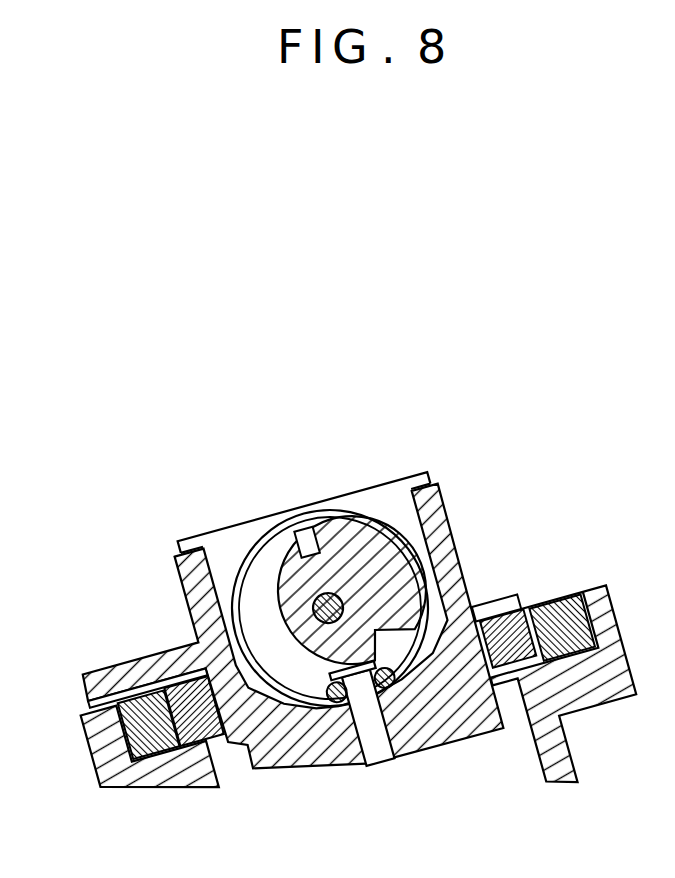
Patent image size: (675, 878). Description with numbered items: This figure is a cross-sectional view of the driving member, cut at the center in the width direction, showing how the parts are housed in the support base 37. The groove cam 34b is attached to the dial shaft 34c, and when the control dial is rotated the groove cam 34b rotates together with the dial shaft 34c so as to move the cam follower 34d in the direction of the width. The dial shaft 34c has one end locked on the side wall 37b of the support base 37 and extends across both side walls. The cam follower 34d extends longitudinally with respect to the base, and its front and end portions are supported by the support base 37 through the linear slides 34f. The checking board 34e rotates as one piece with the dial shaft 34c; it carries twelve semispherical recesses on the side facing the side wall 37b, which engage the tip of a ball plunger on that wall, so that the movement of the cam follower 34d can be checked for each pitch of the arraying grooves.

The groove cam 34b is at (348, 527).
The dial shaft 34c is at (321, 600).
The cam follower 34d is at (432, 743).
The checking board 34e is at (307, 708).
The linear slide 34f is at (188, 732).
The support base 37 is at (100, 787).
The side wall 37b is at (217, 540).